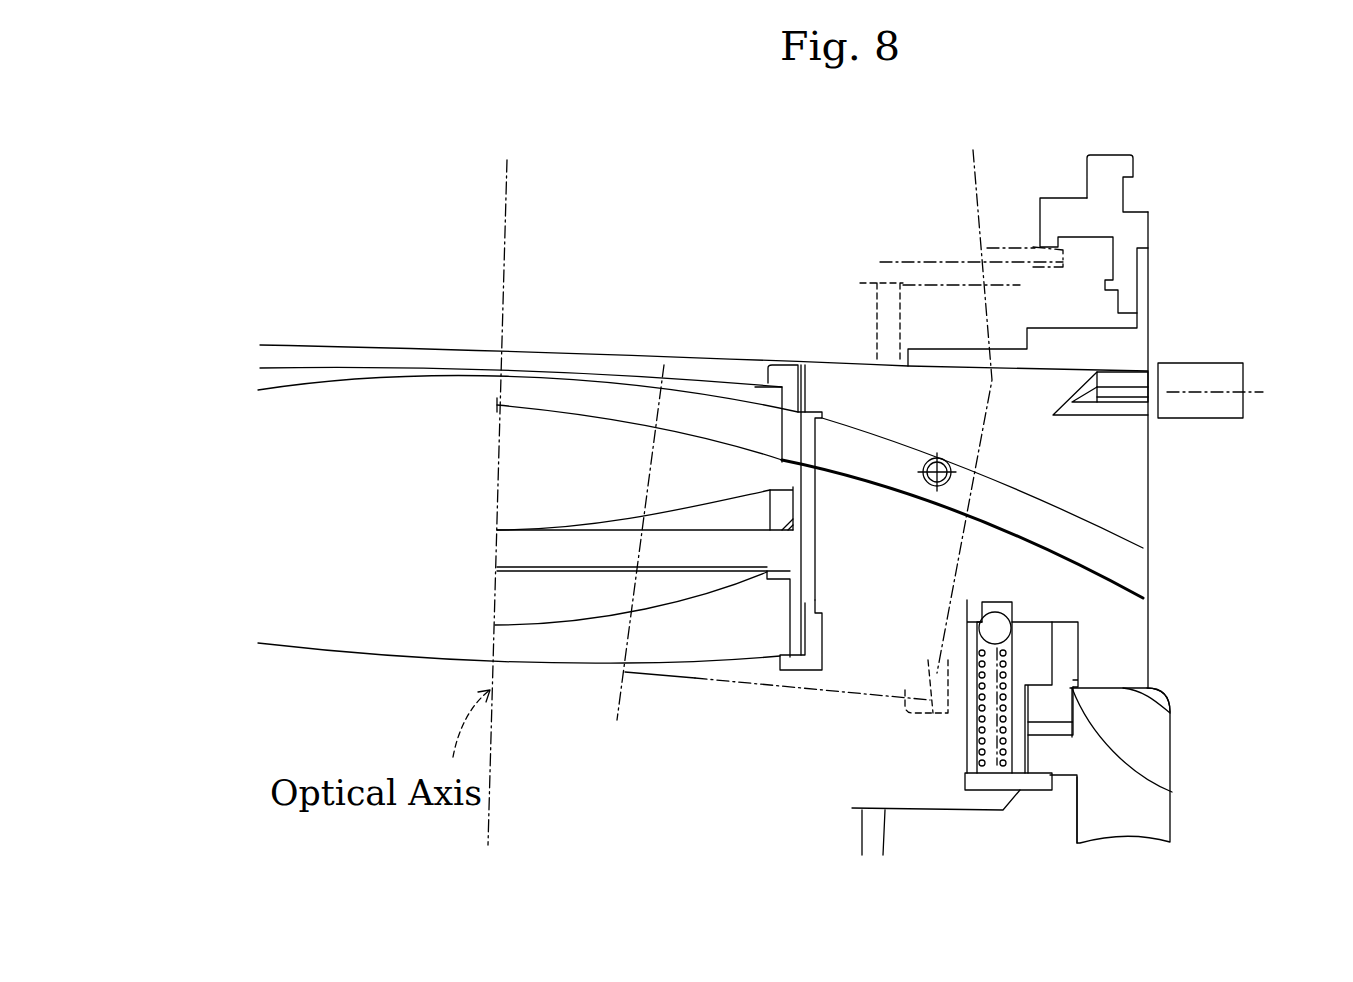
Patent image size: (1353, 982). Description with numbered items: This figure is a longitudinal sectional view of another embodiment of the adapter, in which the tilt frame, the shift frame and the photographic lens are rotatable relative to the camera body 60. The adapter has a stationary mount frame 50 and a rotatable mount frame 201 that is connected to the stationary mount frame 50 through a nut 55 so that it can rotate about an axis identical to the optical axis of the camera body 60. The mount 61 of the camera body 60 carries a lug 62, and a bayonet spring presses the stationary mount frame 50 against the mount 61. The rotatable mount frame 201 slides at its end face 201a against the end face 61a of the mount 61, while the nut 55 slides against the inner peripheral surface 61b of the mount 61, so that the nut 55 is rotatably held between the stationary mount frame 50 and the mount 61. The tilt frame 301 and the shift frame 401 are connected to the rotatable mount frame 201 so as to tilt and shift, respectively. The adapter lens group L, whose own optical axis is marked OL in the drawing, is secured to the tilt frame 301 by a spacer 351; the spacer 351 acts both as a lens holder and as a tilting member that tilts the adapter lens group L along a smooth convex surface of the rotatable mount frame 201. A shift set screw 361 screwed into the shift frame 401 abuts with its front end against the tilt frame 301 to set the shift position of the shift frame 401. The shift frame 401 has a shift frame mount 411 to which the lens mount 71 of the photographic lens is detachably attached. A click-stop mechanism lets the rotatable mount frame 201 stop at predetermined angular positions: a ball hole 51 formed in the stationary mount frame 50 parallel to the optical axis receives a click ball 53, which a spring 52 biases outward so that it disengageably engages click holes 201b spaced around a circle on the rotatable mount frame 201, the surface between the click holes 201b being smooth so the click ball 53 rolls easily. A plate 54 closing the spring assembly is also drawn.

The lens mount 71 is at (955, 247).
The shift frame mount 411 is at (1108, 207).
The shift frame 401 is at (1137, 348).
The shift set screw 361 is at (1203, 373).
The tilt frame 301 is at (1125, 480).
The spacer 351 is at (1128, 568).
The rotatable mount frame 201 is at (1125, 625).
The end face 201a is at (1170, 713).
The click holes 201b is at (972, 618).
The stationary mount frame 50 is at (1052, 705).
The ball hole 51 is at (983, 738).
The spring 52 is at (977, 680).
The click ball 53 is at (975, 634).
The base plate 54 is at (1033, 783).
The nut 55 is at (1172, 792).
The camera body 60 is at (800, 828).
The mount 61 is at (1148, 813).
The end face 61a is at (1103, 688).
The inner peripheral surface 61b is at (1003, 810).
The lug 62 is at (1068, 757).
The adapter lens group L is at (560, 670).
The lens optical axis OL is at (574, 478).